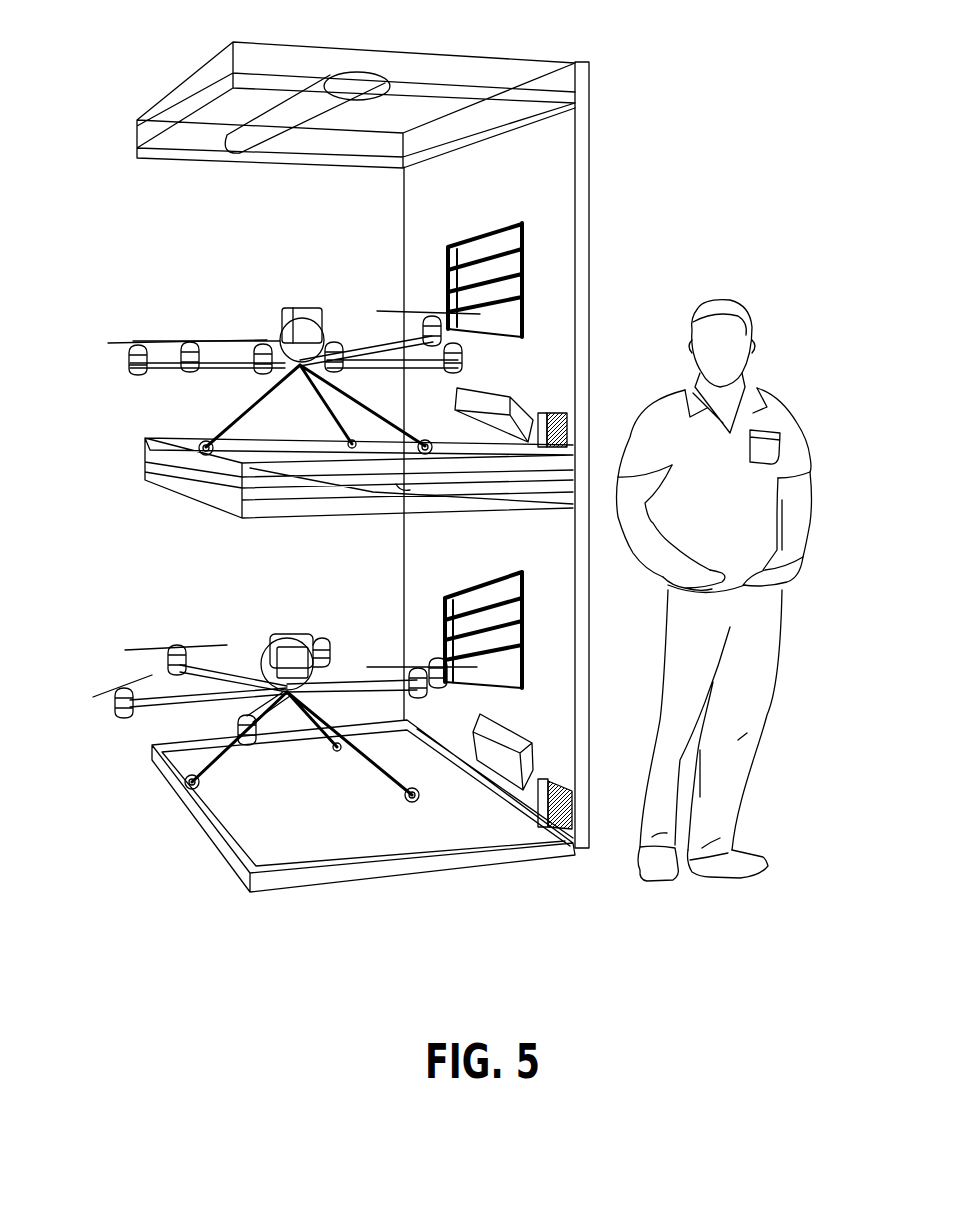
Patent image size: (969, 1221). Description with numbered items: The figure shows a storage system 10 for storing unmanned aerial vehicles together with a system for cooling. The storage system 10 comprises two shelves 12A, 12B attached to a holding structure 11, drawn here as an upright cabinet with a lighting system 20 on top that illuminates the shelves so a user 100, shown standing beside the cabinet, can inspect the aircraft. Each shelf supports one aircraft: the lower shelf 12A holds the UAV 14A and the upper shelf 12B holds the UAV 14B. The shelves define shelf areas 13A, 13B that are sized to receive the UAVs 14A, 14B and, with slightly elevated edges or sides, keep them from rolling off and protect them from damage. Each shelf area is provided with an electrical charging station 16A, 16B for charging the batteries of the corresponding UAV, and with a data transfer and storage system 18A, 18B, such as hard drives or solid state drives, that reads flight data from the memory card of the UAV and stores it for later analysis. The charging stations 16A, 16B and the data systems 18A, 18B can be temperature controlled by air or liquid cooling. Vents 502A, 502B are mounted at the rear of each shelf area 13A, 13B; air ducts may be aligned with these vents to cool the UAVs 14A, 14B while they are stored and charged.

The storage system 10 is at (792, 104).
The holding structure 11 is at (583, 135).
The lighting system 20 is at (250, 147).
The vent 502B is at (523, 222).
The data transfer and storage system 18B is at (503, 408).
The electrical charging station 16B is at (567, 427).
The shelf 12B is at (193, 483).
The shelf area 13B is at (143, 292).
The UAV 14B is at (283, 310).
The vent 502A is at (522, 572).
The data transfer and storage system 18A is at (503, 738).
The electrical charging station 16A is at (567, 797).
The shelf 12A is at (208, 832).
The shelf area 13A is at (108, 630).
The UAV 14A is at (268, 638).
The user 100 is at (778, 413).